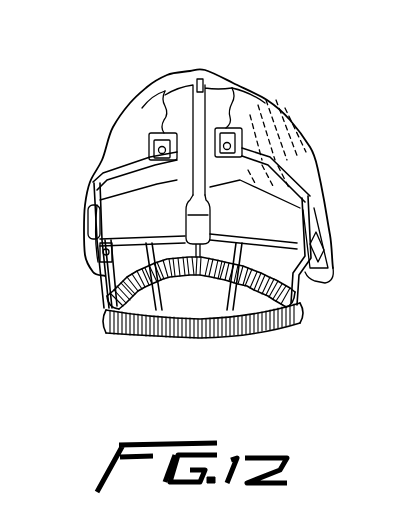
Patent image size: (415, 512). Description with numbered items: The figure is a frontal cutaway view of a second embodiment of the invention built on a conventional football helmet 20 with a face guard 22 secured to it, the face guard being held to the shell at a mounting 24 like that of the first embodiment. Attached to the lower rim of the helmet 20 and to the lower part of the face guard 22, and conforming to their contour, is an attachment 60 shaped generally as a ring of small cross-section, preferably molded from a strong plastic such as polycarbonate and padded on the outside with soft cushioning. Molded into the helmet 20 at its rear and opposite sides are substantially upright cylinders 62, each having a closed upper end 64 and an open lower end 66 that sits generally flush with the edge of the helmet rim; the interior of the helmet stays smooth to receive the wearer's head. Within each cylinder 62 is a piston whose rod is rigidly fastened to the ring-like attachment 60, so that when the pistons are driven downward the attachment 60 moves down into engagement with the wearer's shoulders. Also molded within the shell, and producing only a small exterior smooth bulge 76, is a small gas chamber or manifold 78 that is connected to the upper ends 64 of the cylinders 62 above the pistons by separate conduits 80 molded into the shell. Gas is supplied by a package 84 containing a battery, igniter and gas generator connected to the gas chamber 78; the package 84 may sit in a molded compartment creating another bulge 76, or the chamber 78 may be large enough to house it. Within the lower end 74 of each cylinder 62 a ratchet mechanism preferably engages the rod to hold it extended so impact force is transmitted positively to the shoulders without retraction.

The football helmet 20 is at (305, 131).
The face guard 22 is at (337, 243).
The face mask hinge 24 is at (150, 133).
The attachment 60 is at (242, 338).
The cylinder 62 is at (97, 253).
The closed upper end 64 is at (90, 227).
The open lower end 66 is at (102, 278).
The lower end 74 is at (183, 276).
The exterior smooth bulge 76 is at (178, 73).
The gas chamber 78 is at (220, 85).
The conduit 80 is at (300, 158).
The package 84 is at (200, 78).